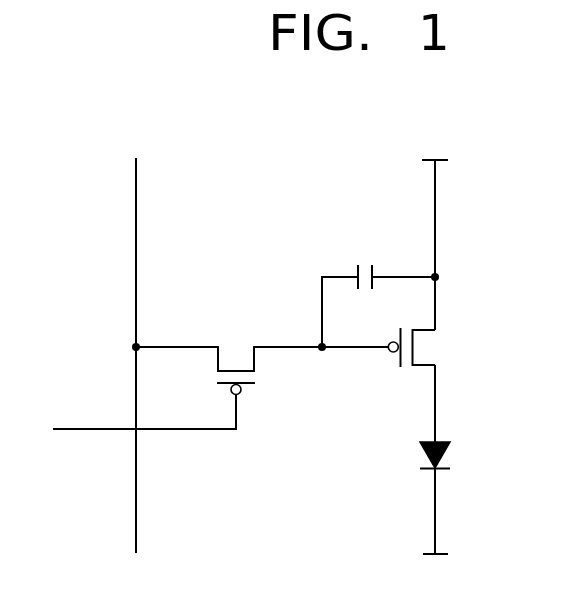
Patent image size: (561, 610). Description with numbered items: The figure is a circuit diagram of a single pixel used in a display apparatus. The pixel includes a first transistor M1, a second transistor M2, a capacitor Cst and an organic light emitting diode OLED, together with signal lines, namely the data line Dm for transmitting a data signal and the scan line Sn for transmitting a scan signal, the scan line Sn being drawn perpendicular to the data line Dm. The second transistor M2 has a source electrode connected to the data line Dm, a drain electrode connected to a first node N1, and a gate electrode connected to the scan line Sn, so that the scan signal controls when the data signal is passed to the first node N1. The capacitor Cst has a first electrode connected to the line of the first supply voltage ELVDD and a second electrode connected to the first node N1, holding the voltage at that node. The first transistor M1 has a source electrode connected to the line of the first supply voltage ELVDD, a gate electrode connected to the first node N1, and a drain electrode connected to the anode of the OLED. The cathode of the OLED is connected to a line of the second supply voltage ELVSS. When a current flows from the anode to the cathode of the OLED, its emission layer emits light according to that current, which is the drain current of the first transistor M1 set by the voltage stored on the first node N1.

The data line Dm is at (135, 341).
The scan line Sn is at (129, 419).
The second transistor M2 is at (229, 355).
The first transistor M1 is at (399, 347).
The first node N1 is at (320, 365).
The capacitor Cst is at (380, 292).
The organic light emitting diode OLED is at (472, 459).
The first supply voltage ELVDD is at (435, 231).
The second supply voltage ELVSS is at (434, 570).